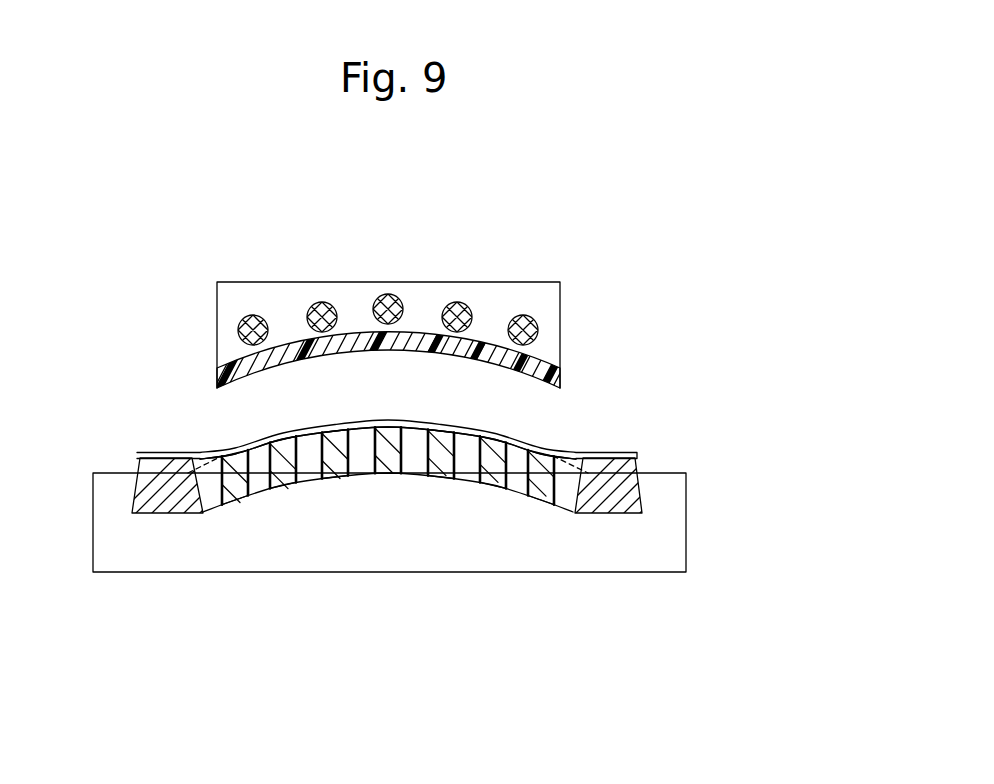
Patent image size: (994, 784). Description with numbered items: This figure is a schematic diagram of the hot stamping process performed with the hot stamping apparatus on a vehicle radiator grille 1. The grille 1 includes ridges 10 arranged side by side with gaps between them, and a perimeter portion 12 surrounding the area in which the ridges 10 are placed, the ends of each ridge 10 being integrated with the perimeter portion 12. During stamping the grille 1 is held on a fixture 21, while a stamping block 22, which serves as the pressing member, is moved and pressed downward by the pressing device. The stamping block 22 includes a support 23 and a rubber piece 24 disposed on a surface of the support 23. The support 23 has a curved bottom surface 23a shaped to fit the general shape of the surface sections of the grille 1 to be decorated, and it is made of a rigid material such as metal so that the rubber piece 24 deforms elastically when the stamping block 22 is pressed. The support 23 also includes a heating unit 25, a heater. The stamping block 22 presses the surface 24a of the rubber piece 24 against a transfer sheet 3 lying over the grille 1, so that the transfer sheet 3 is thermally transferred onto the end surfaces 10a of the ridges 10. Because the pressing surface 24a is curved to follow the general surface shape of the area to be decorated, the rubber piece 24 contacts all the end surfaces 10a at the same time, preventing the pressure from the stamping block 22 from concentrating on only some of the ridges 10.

The radiator grille 1 is at (388, 540).
The ridges 10 is at (393, 452).
The end surfaces of the ridges 10a is at (380, 423).
The transfer sheet 3 is at (198, 457).
The perimeter portion 12 is at (593, 475).
The fixture 21 is at (633, 542).
The stamping block 22 is at (444, 289).
The support 23 is at (403, 276).
The curved bottom surface of the support 23a is at (448, 305).
The rubber piece 24 is at (465, 295).
The surface of the rubber piece 24a is at (320, 358).
The heating unit 25 is at (248, 322).